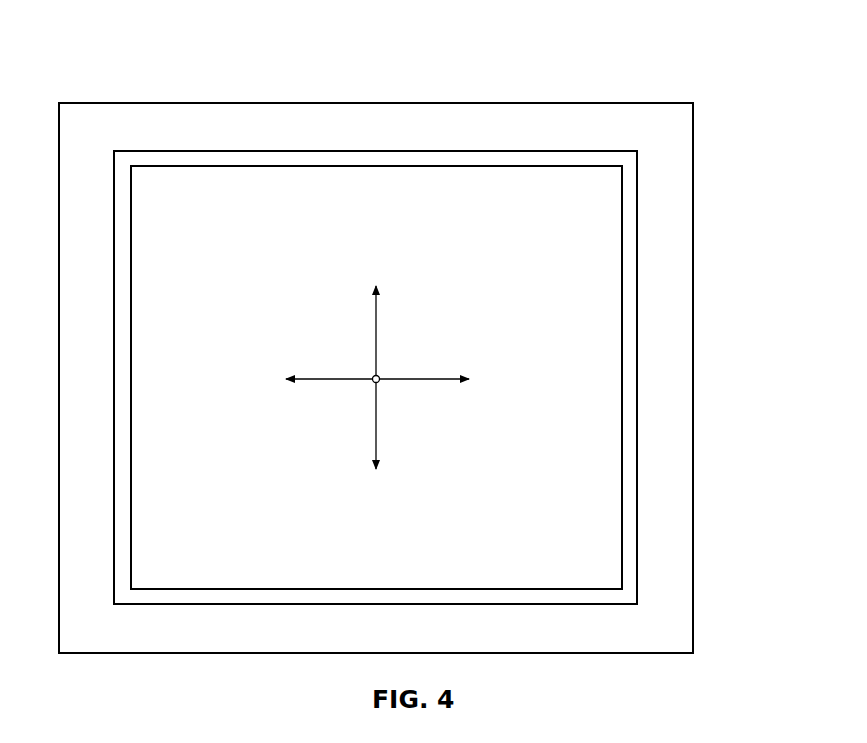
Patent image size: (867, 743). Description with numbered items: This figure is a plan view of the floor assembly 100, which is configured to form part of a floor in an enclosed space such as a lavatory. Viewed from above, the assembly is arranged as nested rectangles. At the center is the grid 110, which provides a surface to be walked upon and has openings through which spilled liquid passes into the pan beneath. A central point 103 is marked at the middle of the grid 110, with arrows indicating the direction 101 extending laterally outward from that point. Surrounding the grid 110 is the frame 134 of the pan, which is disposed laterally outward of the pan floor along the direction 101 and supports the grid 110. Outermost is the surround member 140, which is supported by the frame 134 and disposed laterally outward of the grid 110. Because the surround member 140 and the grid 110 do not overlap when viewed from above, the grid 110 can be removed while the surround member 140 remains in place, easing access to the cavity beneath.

The floor assembly 100 is at (661, 70).
The surround member 140 is at (388, 125).
The frame 134 is at (470, 158).
The grid 110 is at (595, 262).
The central point 103 is at (381, 384).
The direction 101 is at (376, 382).